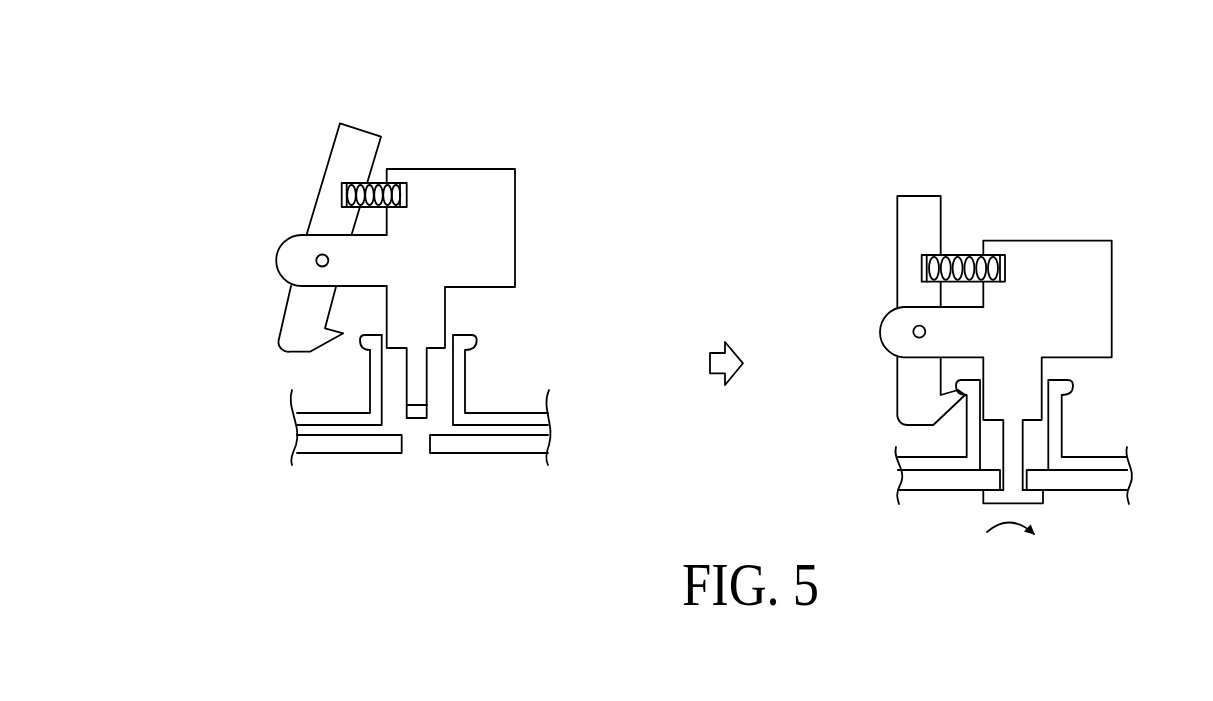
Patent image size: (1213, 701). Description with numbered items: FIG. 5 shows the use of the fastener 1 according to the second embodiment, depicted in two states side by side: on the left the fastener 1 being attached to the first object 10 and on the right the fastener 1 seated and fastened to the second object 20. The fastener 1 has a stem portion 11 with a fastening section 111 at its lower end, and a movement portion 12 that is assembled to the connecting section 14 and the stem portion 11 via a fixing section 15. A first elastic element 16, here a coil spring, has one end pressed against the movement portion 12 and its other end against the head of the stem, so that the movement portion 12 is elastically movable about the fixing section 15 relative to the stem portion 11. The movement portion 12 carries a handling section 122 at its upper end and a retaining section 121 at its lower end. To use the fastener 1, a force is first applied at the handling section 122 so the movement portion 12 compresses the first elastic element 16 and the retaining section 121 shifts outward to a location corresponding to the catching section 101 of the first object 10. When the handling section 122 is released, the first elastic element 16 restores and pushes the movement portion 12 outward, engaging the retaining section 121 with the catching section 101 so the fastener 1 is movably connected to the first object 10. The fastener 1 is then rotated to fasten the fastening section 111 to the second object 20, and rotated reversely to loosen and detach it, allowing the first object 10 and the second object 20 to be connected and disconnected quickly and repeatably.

The fastener 1 is at (531, 152).
The first object 10 is at (310, 420).
The catching section 101 is at (361, 342).
The stem portion 11 is at (528, 233).
The fastening section 111 is at (1032, 503).
The movement portion 12 is at (314, 160).
The retaining section 121 is at (292, 352).
The handling section 122 is at (350, 137).
The connecting section 14 is at (294, 245).
The fixing section 15 is at (316, 261).
The first elastic element 16 is at (371, 184).
The second object 20 is at (318, 447).